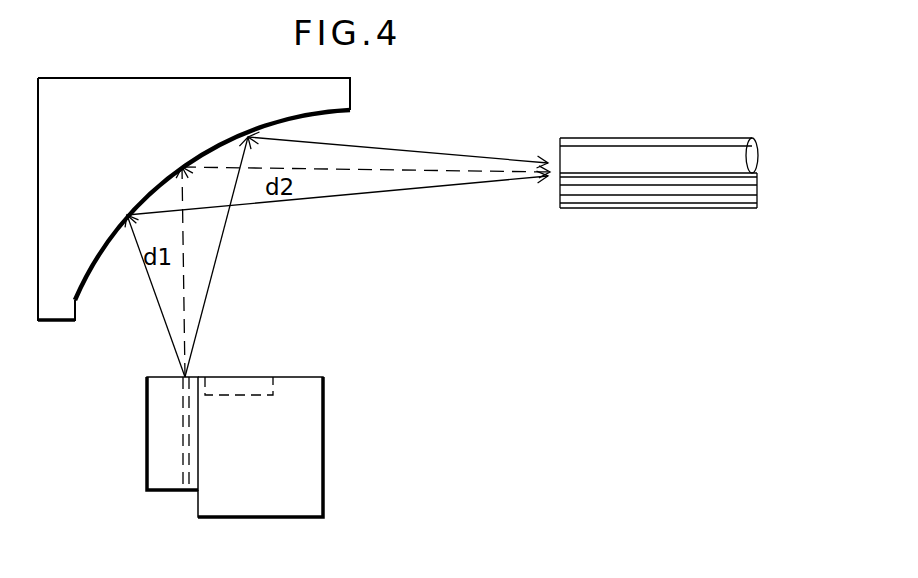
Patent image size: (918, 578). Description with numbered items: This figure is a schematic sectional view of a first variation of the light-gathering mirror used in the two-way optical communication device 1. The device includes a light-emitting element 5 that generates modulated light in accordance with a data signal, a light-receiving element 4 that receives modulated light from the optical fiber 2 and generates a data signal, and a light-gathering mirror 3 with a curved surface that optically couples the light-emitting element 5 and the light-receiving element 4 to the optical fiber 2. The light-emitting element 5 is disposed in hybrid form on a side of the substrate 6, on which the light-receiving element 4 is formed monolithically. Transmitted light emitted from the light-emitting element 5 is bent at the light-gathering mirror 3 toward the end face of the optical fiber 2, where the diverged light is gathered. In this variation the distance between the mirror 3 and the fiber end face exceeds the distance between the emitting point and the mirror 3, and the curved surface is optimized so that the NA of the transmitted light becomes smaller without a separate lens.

The two-way optical communication device 1 is at (521, 91).
The optical fiber 2 is at (617, 150).
The light-gathering mirror 3 is at (352, 101).
The light-receiving element 4 is at (265, 381).
The light-emitting element 5 is at (147, 398).
The substrate 6 is at (313, 421).